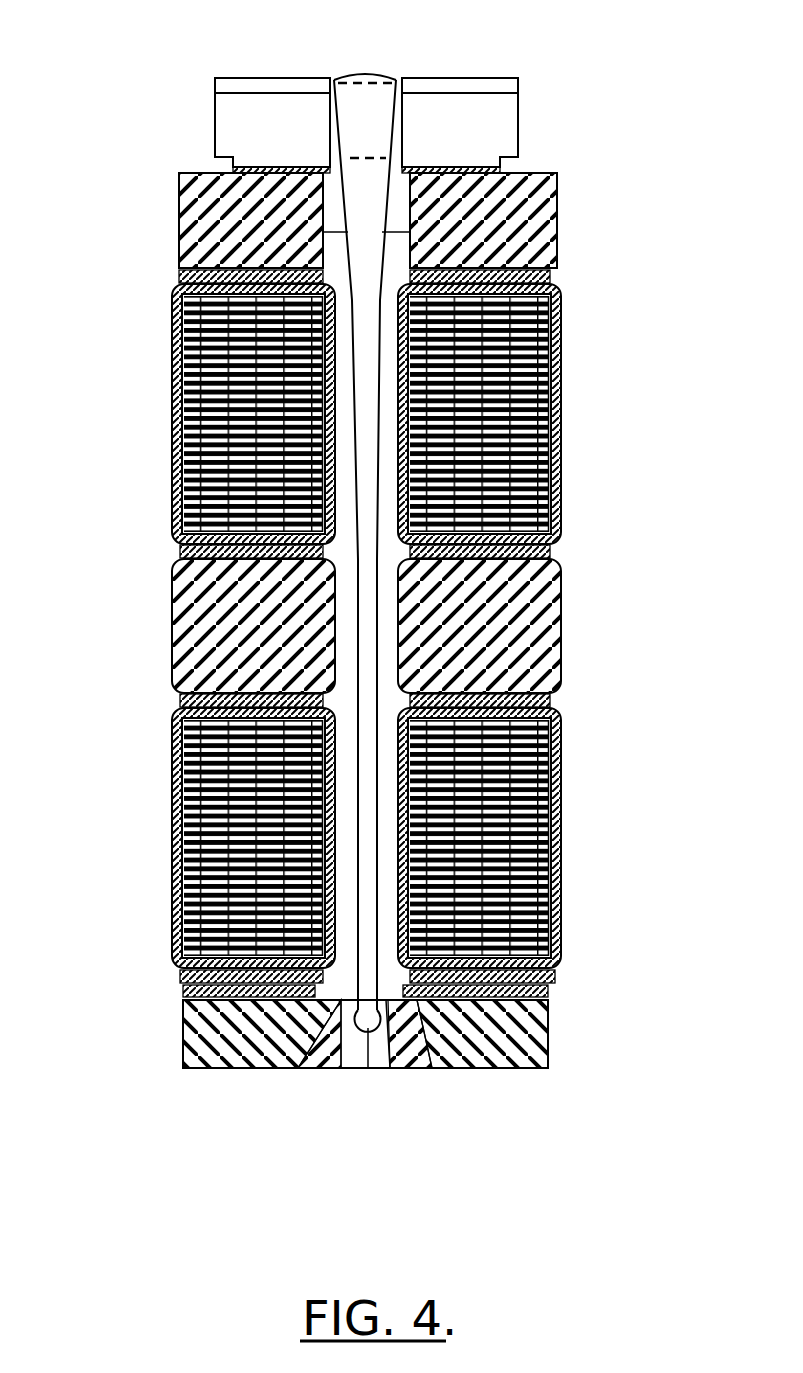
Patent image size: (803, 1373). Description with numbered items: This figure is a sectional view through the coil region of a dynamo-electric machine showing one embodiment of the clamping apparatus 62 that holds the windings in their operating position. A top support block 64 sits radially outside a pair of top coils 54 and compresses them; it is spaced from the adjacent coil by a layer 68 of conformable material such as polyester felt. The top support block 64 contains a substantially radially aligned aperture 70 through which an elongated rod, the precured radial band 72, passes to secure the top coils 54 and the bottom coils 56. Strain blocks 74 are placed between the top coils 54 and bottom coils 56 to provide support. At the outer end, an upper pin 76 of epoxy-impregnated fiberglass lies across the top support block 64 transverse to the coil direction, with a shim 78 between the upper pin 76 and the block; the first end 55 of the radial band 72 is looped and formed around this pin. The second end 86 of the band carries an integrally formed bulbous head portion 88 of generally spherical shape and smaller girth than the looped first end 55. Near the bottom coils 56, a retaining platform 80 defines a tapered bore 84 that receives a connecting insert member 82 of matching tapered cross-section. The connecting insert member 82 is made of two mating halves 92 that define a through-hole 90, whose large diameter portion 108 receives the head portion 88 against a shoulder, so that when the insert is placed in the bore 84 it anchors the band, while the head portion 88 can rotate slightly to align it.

The top coils 54 is at (190, 475).
The first end 55 is at (370, 125).
The bottom coils 56 is at (225, 838).
The clamping apparatus 62 is at (398, 52).
The top support block 64 is at (207, 227).
The layer of conformable material 68 is at (180, 278).
The aperture 70 is at (395, 219).
The precured radial band 72 is at (368, 458).
The strain blocks 74 is at (225, 657).
The upper pin 76 is at (248, 128).
The shim 78 is at (513, 172).
The retaining platform 80 is at (548, 1030).
The connecting insert member 82 is at (400, 1070).
The bore 84 is at (300, 1045).
The second end 86 is at (368, 930).
The head portion 88 is at (383, 998).
The through-hole 90 is at (350, 1062).
The mating halves 92 is at (545, 987).
The first relatively large diameter portion 108 is at (387, 1070).